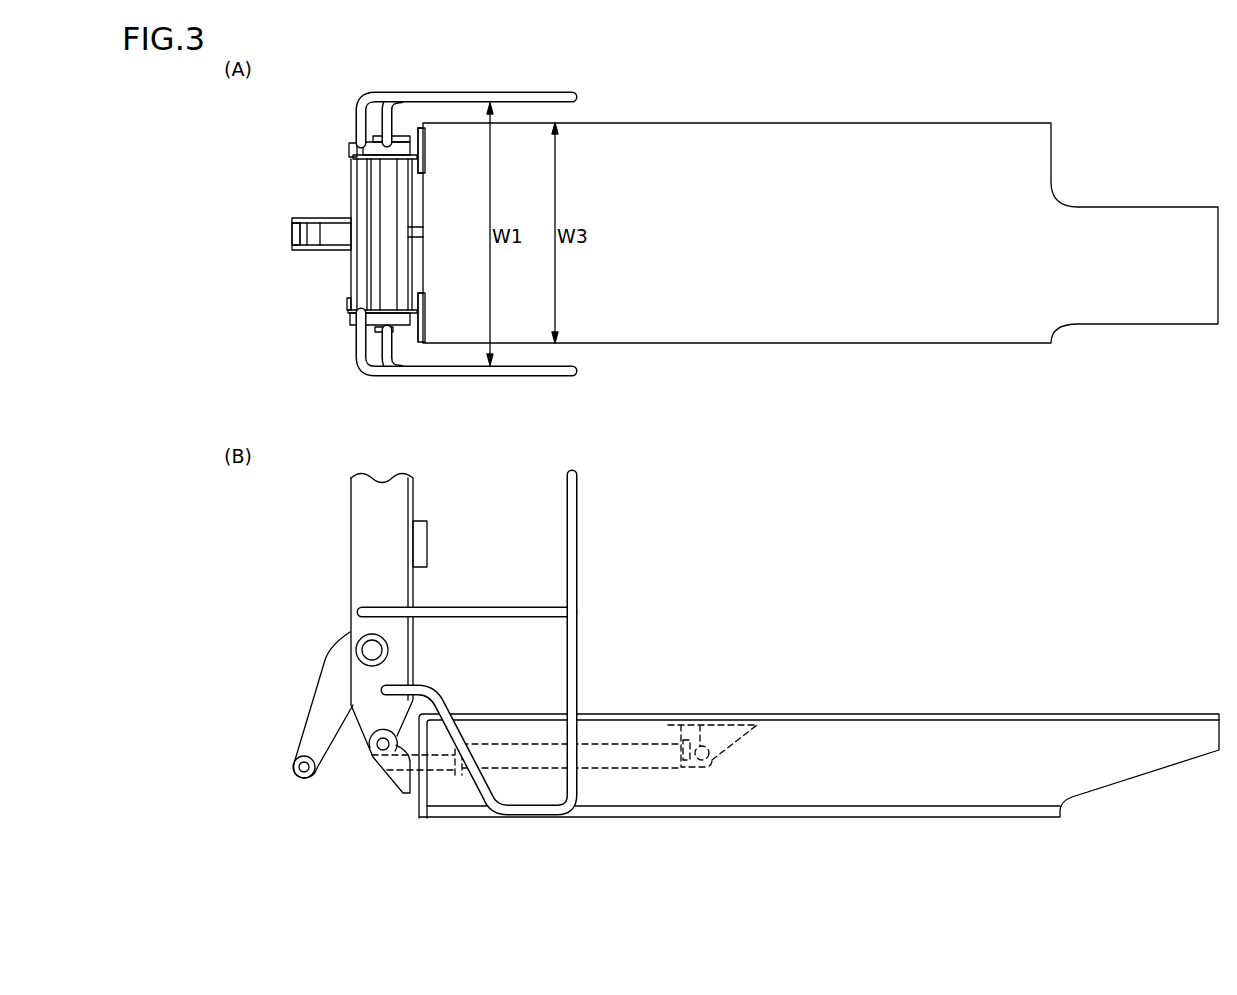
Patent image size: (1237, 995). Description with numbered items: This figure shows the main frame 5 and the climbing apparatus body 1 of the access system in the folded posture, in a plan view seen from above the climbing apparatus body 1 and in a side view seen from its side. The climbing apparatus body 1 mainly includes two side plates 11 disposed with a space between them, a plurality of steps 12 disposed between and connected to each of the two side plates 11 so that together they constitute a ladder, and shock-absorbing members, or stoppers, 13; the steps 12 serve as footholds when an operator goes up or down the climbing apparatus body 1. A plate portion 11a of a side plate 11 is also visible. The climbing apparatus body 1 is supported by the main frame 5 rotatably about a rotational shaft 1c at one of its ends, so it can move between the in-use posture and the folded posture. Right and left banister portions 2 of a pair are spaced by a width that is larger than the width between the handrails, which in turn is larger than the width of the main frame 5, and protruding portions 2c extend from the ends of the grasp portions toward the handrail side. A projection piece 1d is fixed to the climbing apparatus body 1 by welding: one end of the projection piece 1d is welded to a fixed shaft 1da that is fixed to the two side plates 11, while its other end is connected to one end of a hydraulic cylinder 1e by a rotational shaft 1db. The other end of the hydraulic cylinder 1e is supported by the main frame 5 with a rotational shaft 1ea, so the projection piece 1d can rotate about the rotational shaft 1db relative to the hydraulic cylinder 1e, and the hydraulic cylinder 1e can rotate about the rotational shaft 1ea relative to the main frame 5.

The climbing apparatus body 1 is at (372, 556).
The rotational shaft 1c is at (372, 757).
The projection piece 1d is at (300, 219).
The fixed shaft 1da is at (370, 652).
The rotational shaft 1db is at (303, 250).
The hydraulic cylinder 1e is at (338, 770).
The rotational shaft 1ea is at (707, 718).
The banister portion 2 is at (536, 93).
The protruding portion 2c is at (581, 758).
The main frame 5 is at (872, 153).
The side plate 11 is at (380, 320).
The frame side wall 11a is at (410, 499).
The step 12 is at (385, 193).
The shock-absorbing member 13 is at (417, 138).